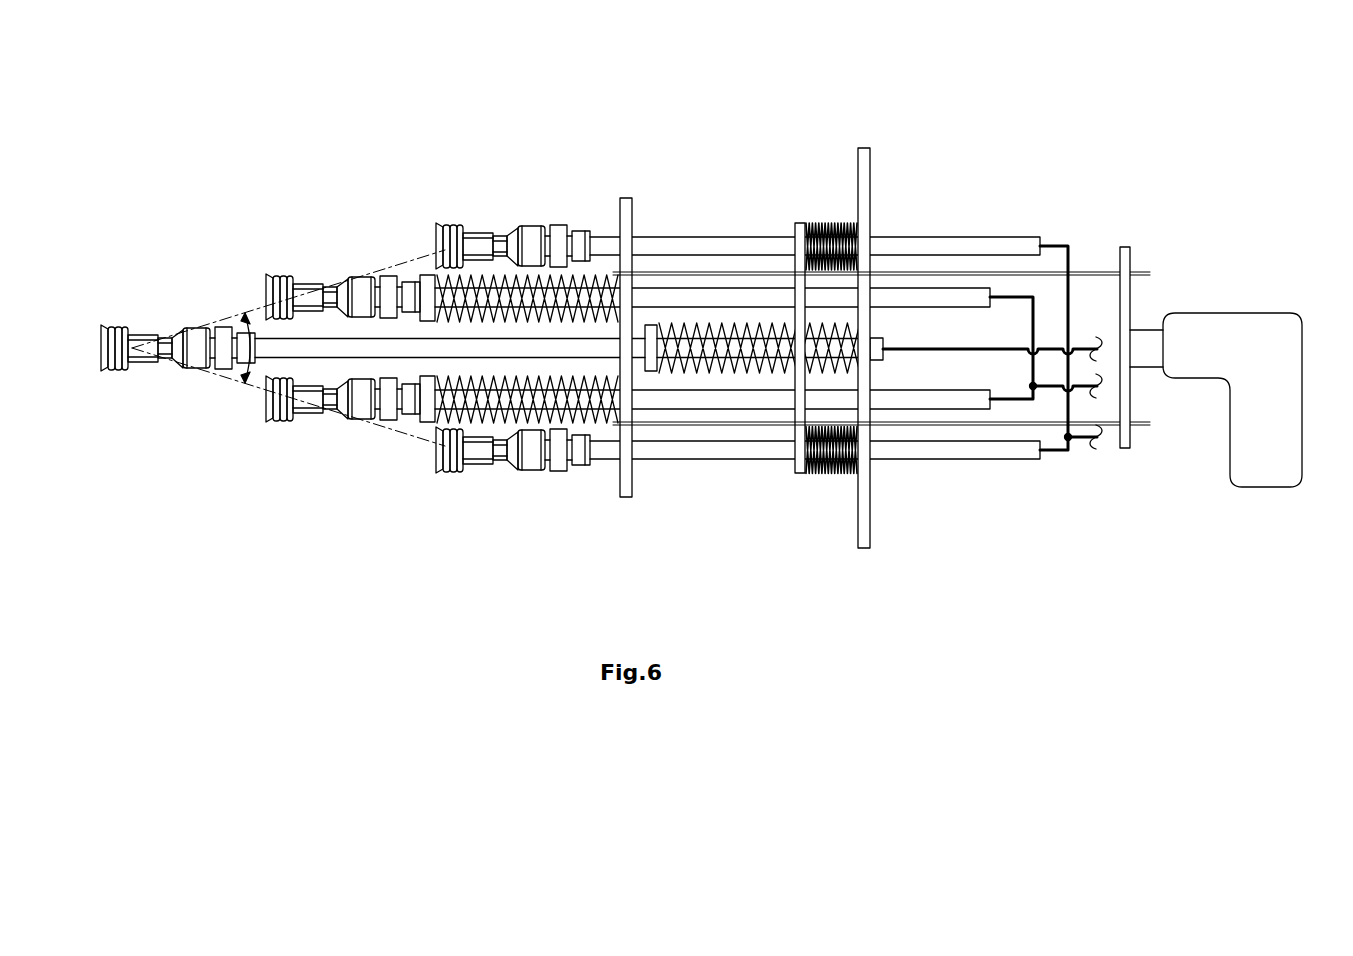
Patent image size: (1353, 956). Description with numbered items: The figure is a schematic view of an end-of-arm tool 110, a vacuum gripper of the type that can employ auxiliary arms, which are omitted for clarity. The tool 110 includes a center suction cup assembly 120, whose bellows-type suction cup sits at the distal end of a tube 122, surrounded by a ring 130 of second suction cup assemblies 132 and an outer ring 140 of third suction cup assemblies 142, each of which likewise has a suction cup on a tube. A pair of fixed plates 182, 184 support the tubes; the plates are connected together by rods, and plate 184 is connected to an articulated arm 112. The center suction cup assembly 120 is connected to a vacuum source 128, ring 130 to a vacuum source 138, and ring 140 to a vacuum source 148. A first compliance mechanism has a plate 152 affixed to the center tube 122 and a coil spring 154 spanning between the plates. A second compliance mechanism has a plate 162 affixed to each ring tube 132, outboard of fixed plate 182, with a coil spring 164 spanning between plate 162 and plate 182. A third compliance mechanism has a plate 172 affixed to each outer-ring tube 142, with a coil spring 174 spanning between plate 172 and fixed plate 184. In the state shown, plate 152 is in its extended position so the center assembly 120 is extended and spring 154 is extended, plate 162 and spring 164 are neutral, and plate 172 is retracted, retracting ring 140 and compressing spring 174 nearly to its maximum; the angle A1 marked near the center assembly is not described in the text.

The tool 110 is at (1058, 76).
The articulated arm 112 is at (1263, 445).
The center suction cup assembly 120 is at (207, 411).
The tube 122 is at (178, 348).
The vacuum source 128 is at (1088, 347).
The ring of second suction cup assemblies 130 is at (712, 404).
The second suction cup assemblies 132 is at (750, 398).
The vacuum source 138 is at (1085, 392).
The ring of third suction cup assemblies 140 is at (815, 395).
The third suction cup assemblies 142 is at (692, 452).
The vacuum source 148 is at (1080, 440).
The plate 152 is at (654, 341).
The spring 154 is at (822, 368).
The plate 162 is at (430, 288).
The spring 164 is at (477, 417).
The plate 172 is at (798, 243).
The spring 174 is at (822, 224).
The fixed plate 182 is at (625, 465).
The fixed plate 184 is at (868, 185).
The angle A1 is at (249, 340).